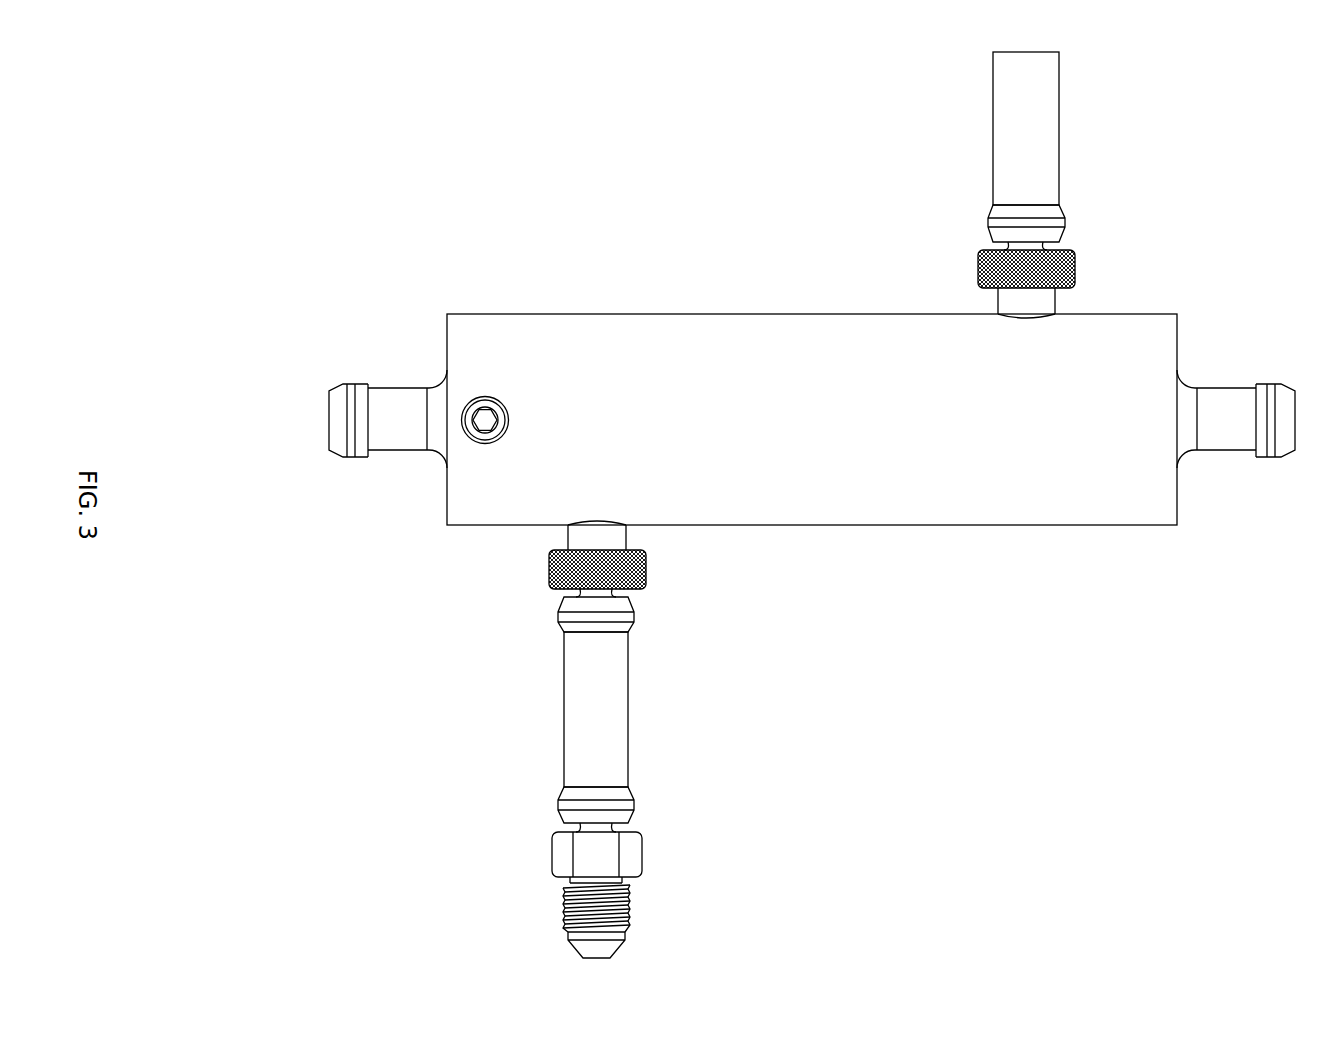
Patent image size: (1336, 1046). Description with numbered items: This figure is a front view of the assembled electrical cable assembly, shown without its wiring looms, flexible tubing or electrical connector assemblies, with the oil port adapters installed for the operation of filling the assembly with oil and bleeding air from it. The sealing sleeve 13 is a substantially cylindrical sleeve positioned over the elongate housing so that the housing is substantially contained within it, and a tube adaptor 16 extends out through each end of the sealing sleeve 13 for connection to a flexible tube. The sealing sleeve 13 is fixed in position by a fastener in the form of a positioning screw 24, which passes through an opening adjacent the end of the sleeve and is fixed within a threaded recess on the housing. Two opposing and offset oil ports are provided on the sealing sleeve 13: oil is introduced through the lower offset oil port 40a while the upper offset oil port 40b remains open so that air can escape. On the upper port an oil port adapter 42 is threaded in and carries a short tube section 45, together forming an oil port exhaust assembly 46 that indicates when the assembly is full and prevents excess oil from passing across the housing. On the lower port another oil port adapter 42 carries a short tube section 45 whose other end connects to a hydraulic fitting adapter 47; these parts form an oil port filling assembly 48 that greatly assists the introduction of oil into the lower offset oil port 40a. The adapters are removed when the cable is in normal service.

The sealing sleeve 13 is at (900, 527).
The tube adaptor 16 is at (388, 453).
The positioning screw 24 is at (470, 405).
The lower offset oil port 40a is at (640, 537).
The upper offset oil port 40b is at (1068, 300).
The oil port adapter 42 is at (980, 268).
The short tube section 45 is at (992, 130).
The oil port exhaust assembly 46 is at (1150, 159).
The hydraulic fitting adapter 47 is at (552, 857).
The oil port filling assembly 48 is at (642, 773).